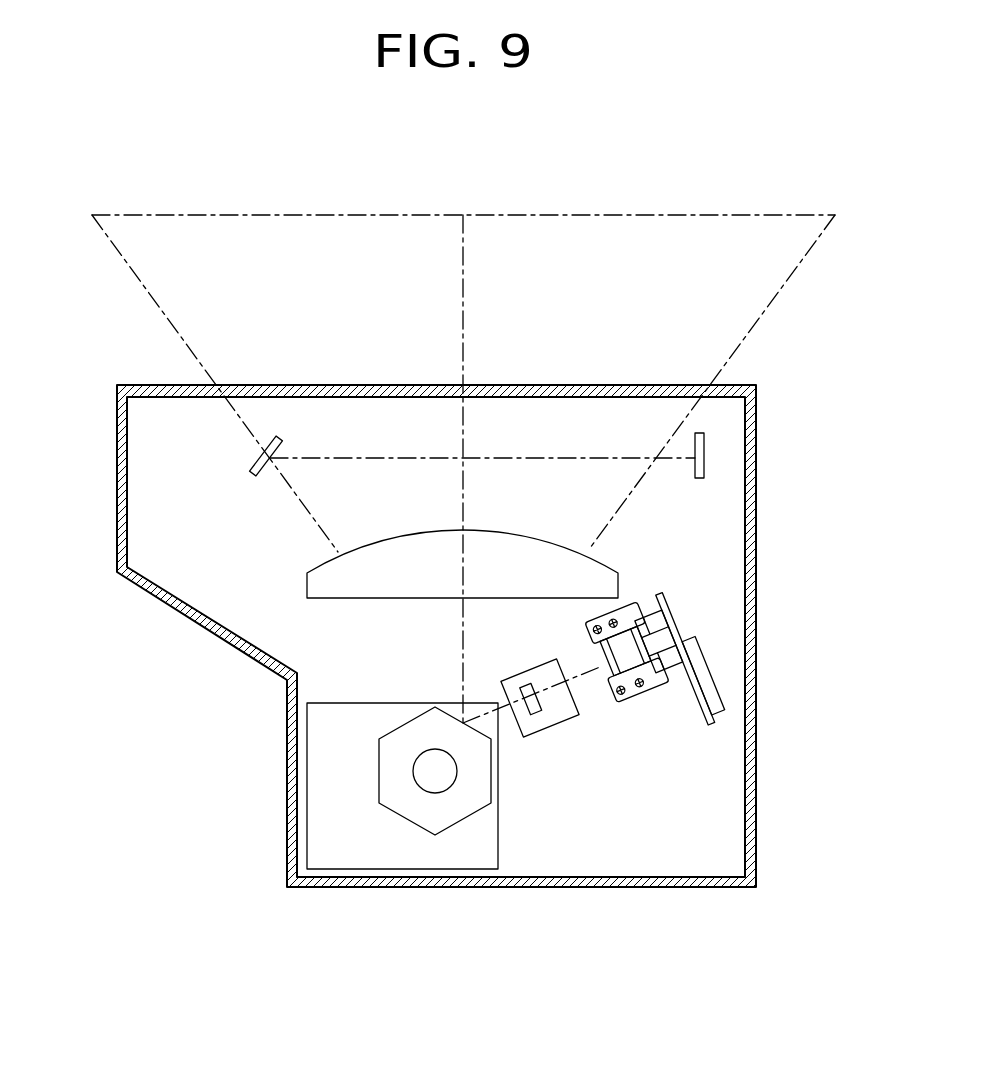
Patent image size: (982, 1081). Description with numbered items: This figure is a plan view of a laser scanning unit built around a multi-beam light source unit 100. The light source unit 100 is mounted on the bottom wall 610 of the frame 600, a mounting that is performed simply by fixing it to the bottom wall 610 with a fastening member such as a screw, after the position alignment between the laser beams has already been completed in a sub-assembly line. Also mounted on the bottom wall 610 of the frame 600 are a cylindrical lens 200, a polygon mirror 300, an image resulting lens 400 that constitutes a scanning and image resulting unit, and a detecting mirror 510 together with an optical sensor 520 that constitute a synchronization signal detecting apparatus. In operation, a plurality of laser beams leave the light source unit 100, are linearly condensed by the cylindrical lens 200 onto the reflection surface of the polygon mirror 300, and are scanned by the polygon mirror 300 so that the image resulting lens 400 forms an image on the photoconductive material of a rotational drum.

The multi-beam light source unit 100 is at (712, 638).
The cylindrical lens 200 is at (553, 728).
The polygon mirror 300 is at (407, 818).
The image resulting lens 400 is at (307, 587).
The detecting mirror 510 is at (260, 452).
The optical sensor 520 is at (704, 456).
The frame 600 is at (255, 715).
The bottom wall 610 is at (660, 779).